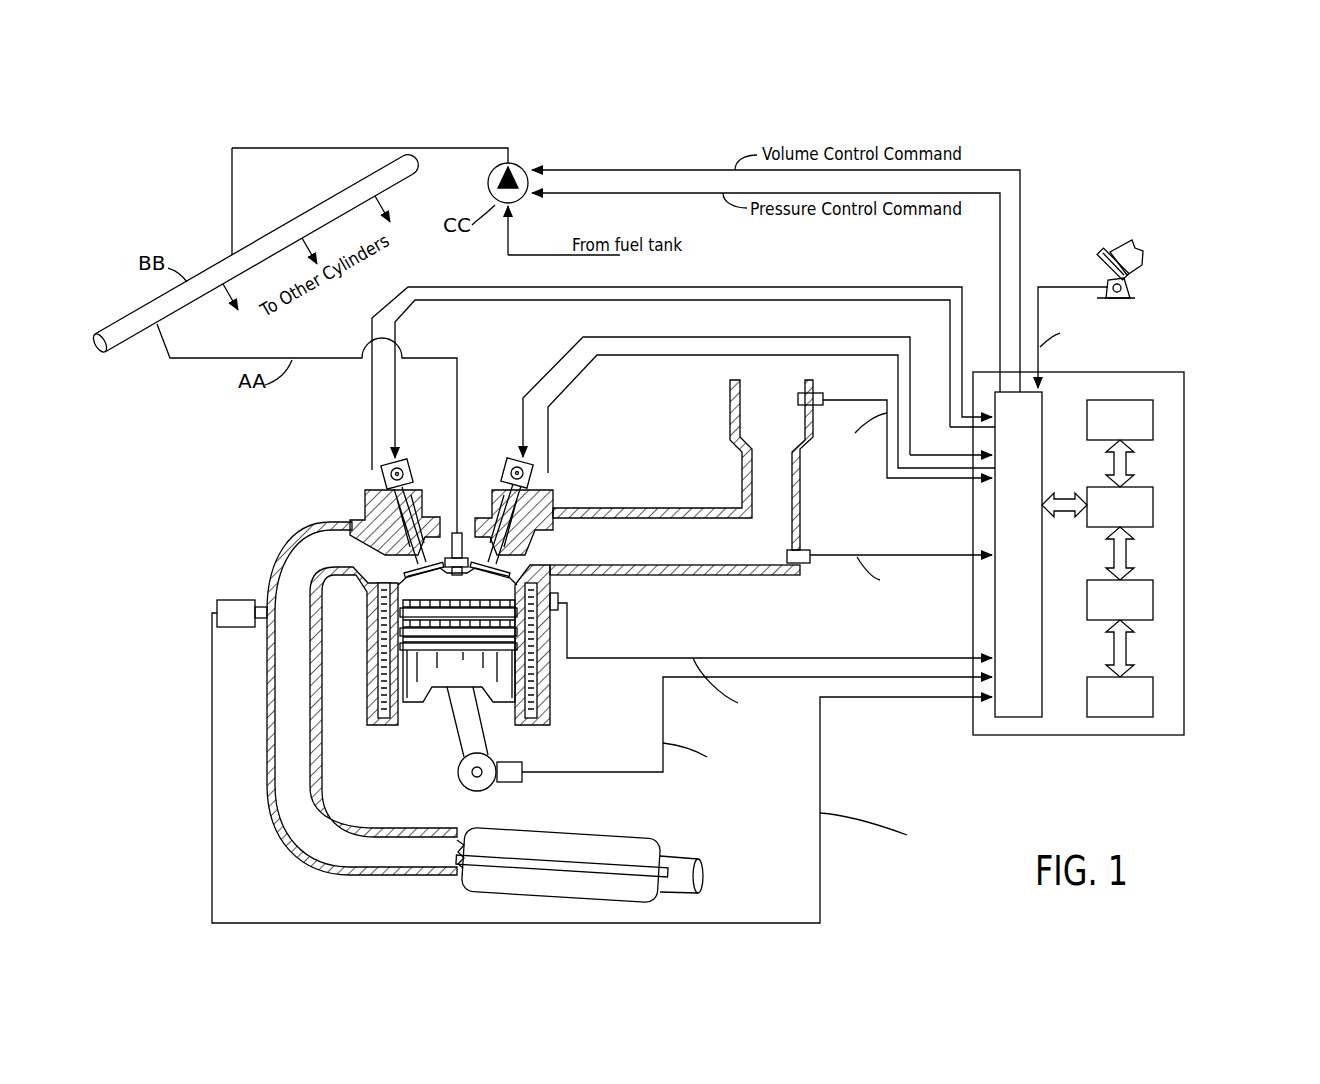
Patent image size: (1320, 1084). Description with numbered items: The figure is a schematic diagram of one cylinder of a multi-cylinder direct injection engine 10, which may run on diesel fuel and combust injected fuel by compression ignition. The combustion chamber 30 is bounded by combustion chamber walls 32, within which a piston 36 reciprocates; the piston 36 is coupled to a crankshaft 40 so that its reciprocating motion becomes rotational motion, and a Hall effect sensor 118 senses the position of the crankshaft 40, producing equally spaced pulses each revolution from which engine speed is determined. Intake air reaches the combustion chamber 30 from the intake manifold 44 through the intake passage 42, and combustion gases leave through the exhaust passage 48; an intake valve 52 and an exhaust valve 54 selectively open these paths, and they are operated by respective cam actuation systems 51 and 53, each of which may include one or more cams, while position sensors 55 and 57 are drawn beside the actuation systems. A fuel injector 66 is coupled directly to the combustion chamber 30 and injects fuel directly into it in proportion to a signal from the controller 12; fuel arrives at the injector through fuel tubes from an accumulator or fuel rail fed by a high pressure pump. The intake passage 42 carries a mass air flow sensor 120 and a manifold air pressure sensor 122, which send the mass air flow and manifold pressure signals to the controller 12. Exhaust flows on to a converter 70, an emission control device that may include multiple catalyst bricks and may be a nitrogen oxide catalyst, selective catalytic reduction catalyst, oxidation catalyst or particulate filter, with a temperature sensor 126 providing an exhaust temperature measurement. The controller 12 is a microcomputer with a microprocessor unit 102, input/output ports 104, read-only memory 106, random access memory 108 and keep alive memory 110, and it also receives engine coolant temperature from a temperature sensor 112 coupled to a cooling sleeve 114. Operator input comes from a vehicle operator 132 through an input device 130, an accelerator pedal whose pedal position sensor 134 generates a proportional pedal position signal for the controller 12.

The engine 10 is at (160, 180).
The controller 12 is at (1173, 372).
The combustion chamber 30 is at (433, 585).
The combustion chamber walls 32 is at (408, 712).
The piston 36 is at (442, 677).
The crankshaft 40 is at (468, 788).
The intake passage 42 is at (784, 424).
The intake manifold 44 is at (724, 554).
The exhaust passage 48 is at (349, 559).
The cam actuation system 51 is at (513, 470).
The intake valve 52 is at (498, 555).
The cam actuation system 53 is at (406, 470).
The exhaust valve 54 is at (393, 545).
The position sensor 55 is at (535, 483).
The position sensor 57 is at (385, 482).
The fuel injector 66 is at (462, 533).
The converter 70 is at (623, 837).
The microprocessor unit 102 is at (1153, 502).
The input/output ports 104 is at (1043, 400).
The read-only memory 106 is at (1153, 415).
The random access memory 108 is at (1153, 600).
The keep alive memory 110 is at (1153, 697).
The temperature sensor 112 is at (560, 605).
The cooling sleeve 114 is at (540, 678).
The Hall effect sensor 118 is at (510, 785).
The mass air flow sensor 120 is at (818, 394).
The manifold air pressure sensor 122 is at (807, 565).
The temperature sensor 126 is at (215, 600).
The input device 130 is at (1100, 256).
The vehicle operator 132 is at (1142, 252).
The pedal position sensor 134 is at (1130, 287).